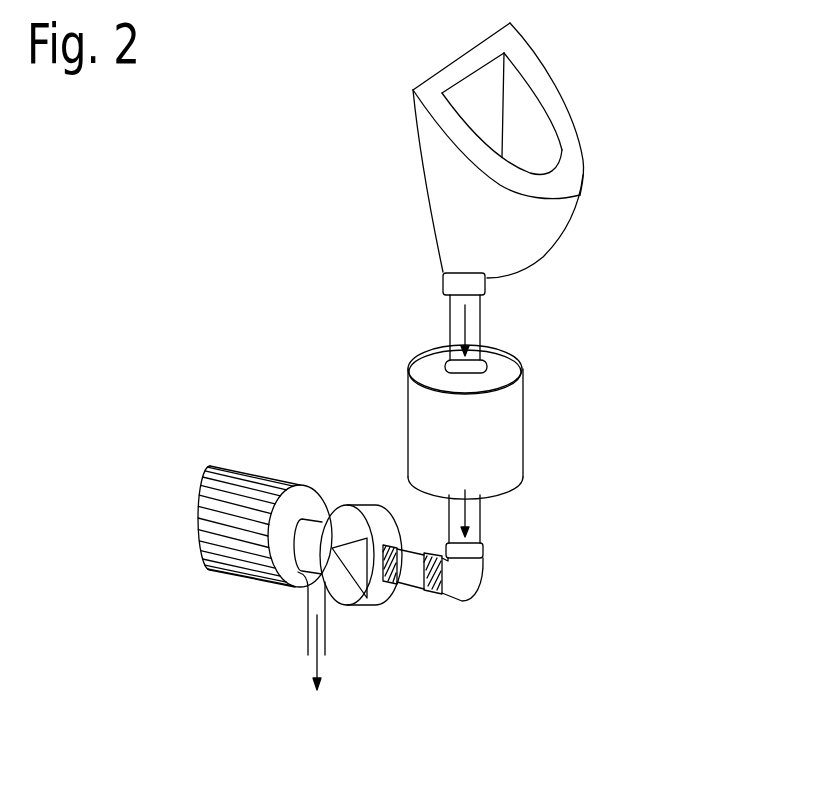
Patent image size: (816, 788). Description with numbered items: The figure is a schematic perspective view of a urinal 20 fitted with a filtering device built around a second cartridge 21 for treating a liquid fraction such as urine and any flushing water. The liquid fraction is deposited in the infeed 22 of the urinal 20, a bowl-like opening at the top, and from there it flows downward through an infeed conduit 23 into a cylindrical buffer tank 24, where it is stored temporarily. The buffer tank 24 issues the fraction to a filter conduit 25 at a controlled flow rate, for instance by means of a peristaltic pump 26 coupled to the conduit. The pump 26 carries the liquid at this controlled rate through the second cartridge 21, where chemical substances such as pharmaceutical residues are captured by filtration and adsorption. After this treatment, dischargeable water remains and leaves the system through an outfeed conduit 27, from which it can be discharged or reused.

The urinal 20 is at (597, 240).
The second cartridge 21 is at (246, 480).
The infeed 22 is at (535, 140).
The infeed conduit 23 is at (470, 325).
The buffer tank 24 is at (500, 437).
The filter conduit 25 is at (468, 573).
The pump 26 is at (370, 599).
The outfeed conduit 27 is at (308, 621).